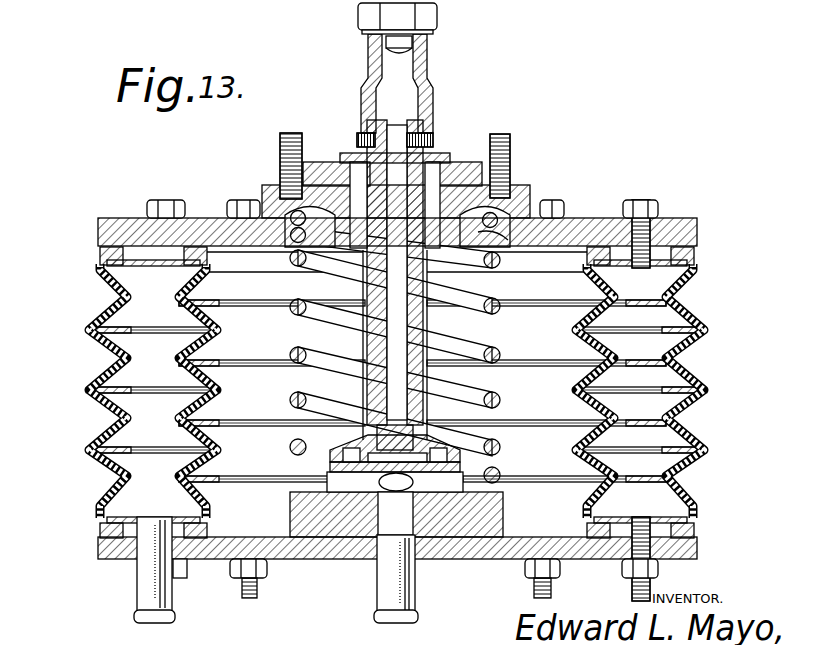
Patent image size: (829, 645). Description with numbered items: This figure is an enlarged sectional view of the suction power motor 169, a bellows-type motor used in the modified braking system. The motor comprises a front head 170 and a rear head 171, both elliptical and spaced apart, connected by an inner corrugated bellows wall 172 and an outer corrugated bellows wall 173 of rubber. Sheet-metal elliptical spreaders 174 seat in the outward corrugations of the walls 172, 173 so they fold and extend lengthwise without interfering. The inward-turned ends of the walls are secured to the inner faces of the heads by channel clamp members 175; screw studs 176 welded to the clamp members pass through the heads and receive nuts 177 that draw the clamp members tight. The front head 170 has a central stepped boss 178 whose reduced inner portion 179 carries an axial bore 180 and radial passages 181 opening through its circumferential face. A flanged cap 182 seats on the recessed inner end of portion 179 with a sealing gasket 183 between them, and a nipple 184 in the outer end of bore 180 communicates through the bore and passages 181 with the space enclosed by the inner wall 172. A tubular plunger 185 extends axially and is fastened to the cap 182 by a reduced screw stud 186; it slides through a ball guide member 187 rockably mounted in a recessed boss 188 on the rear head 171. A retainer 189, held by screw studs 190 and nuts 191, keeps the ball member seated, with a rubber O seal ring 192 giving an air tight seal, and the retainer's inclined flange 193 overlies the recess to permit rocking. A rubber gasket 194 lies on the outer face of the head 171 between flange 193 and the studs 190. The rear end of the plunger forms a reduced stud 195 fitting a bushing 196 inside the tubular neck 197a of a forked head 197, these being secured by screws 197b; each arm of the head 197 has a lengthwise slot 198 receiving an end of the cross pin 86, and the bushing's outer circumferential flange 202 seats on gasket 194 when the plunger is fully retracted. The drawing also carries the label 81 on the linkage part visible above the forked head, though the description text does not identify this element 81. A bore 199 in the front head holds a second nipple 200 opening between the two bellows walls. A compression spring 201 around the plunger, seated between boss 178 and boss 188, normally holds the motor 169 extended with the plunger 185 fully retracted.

The cross pin 86 is at (358, 17).
The stud 81 is at (428, 53).
The suction power motor 169 is at (367, 391).
The front head 170 is at (98, 550).
The rear head 171 is at (98, 222).
The inner corrugated bellows wall 172 is at (213, 349).
The outer corrugated bellows wall 173 is at (108, 373).
The elliptical spreaders 174 is at (128, 335).
The channel clamp members 175 is at (163, 267).
The screw studs 176 is at (664, 221).
The nuts 177 is at (657, 204).
The boss 178 is at (298, 518).
The inner portion of boss 179 is at (357, 493).
The axial bore 180 is at (400, 530).
The radial passages 181 is at (452, 483).
The flanged cap 182 is at (348, 428).
The sealing gasket 183 is at (330, 466).
The nipple 184 is at (400, 600).
The tubular plunger 185 is at (440, 318).
The reduced screw stud 186 is at (448, 432).
The ball guide member 187 is at (312, 262).
The boss 188 is at (500, 259).
The retainer 189 is at (520, 190).
The screw studs 190 is at (512, 146).
The nuts 191 is at (280, 172).
The rubber O seal ring 192 is at (322, 165).
The inclined flange 193 is at (436, 140).
The rubber gasket 194 is at (477, 157).
The reduced stud 195 is at (433, 90).
The bushing 196 is at (430, 82).
The forked head 197 is at (365, 58).
The tubular neck 197a is at (435, 107).
The screws 197b is at (437, 133).
The lengthwise slot 198 is at (364, 33).
The bore 199 is at (117, 559).
The second nipple 200 is at (143, 594).
The compression spring 201 is at (500, 350).
The outer circumferential flange 202 is at (350, 150).